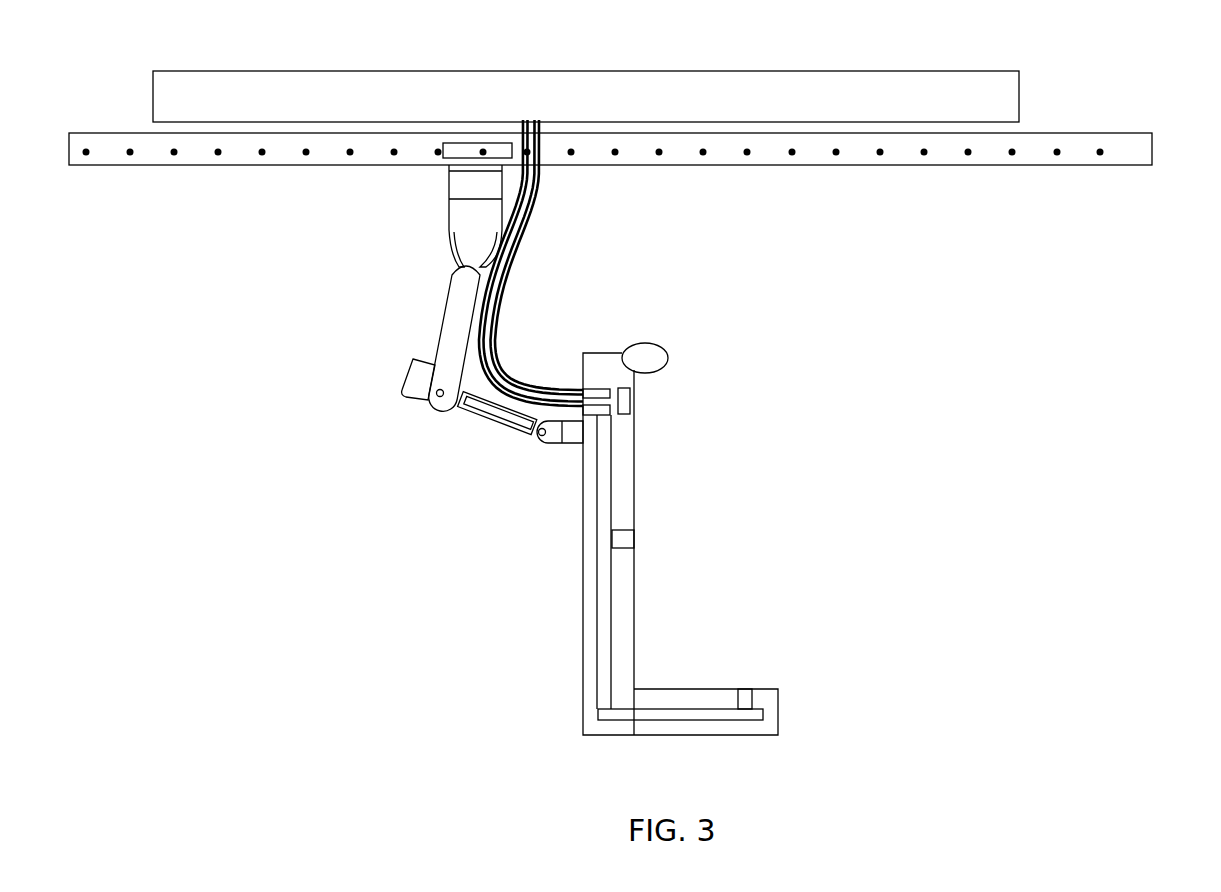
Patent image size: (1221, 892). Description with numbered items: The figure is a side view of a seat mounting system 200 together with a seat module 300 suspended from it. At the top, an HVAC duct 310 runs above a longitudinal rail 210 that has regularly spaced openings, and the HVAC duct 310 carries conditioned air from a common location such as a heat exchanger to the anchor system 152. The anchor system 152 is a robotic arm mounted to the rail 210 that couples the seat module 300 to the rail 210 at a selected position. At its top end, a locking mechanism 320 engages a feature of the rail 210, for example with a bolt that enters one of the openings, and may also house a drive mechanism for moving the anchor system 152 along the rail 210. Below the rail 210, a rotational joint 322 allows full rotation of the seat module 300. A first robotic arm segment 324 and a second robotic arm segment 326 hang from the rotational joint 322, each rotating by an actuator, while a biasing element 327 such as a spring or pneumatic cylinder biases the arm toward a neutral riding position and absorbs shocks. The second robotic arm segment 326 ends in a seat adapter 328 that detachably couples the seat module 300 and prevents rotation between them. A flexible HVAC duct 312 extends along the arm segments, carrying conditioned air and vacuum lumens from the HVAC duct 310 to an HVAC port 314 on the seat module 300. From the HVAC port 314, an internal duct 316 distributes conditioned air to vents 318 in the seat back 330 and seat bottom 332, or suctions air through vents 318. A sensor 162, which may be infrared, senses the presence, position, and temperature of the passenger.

The seat mounting system 200 is at (1068, 90).
The HVAC duct 310 is at (270, 71).
The longitudinal rail 210 is at (156, 165).
The anchor system 152 is at (305, 276).
The locking mechanism 320 is at (438, 157).
The rotational joint 322 is at (443, 188).
The first robotic arm segment 324 is at (443, 297).
The biasing element 327 is at (470, 410).
The second robotic arm segment 326 is at (493, 422).
The seat adapter 328 is at (563, 443).
The HVAC duct 312 is at (533, 273).
The seat module 300 is at (764, 463).
The HVAC port 314 is at (577, 388).
The internal duct 316 is at (602, 565).
The vents 318 is at (627, 413).
The seat back 330 is at (633, 600).
The seat bottom 332 is at (682, 689).
The sensor 162 is at (663, 348).